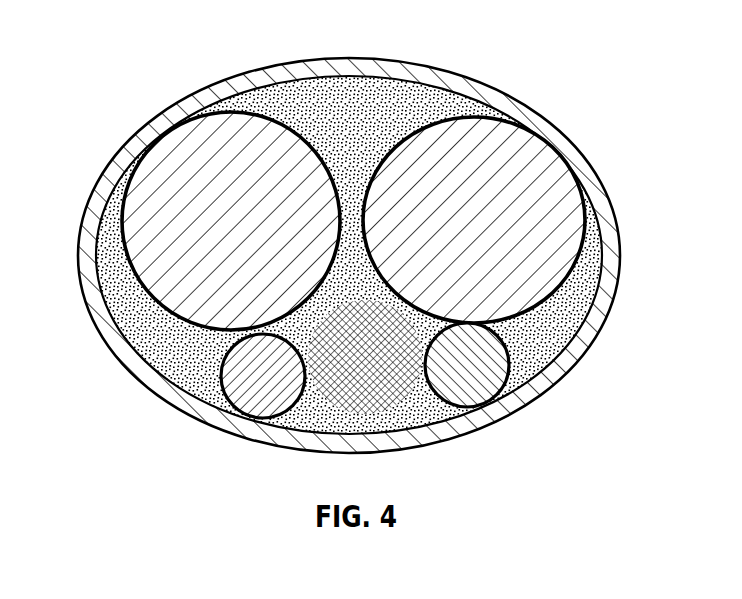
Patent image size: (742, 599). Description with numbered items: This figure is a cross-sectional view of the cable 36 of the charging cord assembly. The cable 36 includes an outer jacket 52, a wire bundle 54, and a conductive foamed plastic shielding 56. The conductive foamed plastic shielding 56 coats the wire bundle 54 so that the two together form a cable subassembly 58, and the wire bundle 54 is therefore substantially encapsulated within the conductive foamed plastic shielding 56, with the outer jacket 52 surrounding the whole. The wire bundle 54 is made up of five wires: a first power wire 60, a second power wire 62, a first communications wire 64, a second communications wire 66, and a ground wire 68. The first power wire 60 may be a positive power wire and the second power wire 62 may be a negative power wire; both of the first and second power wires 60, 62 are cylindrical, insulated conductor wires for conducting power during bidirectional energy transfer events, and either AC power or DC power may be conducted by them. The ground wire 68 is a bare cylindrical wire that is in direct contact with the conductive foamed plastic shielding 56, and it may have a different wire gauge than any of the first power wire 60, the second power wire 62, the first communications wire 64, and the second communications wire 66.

The cable 36 is at (543, 88).
The outer jacket 52 is at (612, 213).
The wire bundle 54 is at (237, 112).
The conductive foamed plastic shielding 56 is at (550, 352).
The cable subassembly 58 is at (233, 411).
The first power wire 60 is at (195, 157).
The second power wire 62 is at (552, 175).
The first communications wire 64 is at (285, 385).
The second communications wire 66 is at (463, 368).
The ground wire 68 is at (373, 407).